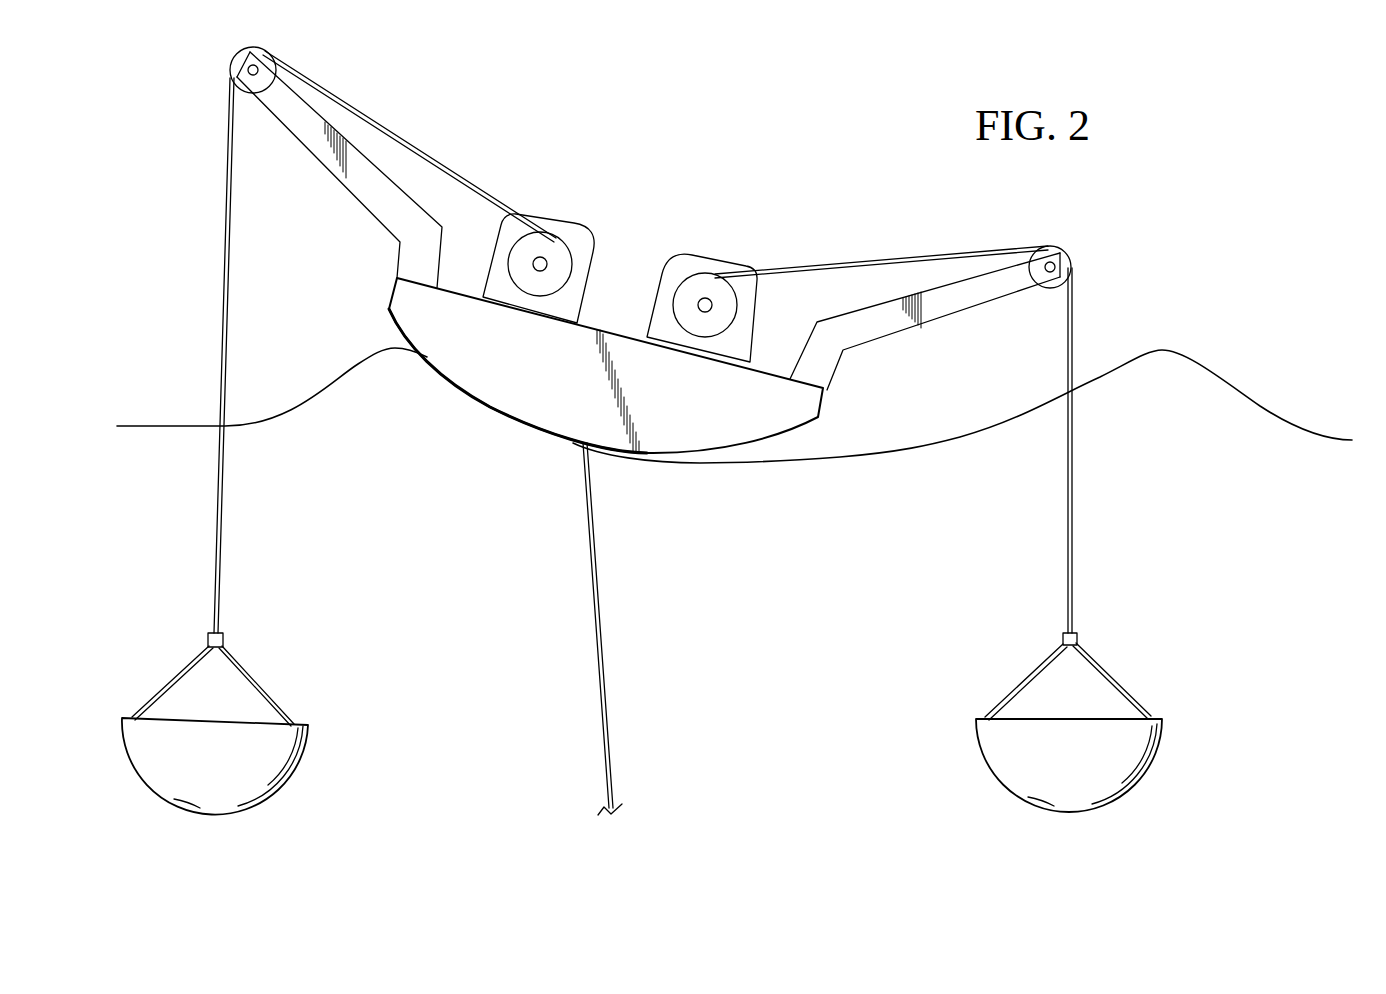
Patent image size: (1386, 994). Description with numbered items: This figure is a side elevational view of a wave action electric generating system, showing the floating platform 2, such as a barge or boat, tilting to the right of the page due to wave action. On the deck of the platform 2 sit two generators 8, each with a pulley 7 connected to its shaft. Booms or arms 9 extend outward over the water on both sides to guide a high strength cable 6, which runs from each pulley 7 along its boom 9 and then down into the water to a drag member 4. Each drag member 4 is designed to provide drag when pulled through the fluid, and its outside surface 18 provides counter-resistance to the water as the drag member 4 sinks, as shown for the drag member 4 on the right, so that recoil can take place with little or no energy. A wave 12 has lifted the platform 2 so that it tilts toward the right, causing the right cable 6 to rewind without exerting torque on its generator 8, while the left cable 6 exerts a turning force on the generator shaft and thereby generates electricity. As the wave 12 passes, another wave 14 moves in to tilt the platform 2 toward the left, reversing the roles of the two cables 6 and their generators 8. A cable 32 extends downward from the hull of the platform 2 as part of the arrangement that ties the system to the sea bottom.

The floating platform 2 is at (767, 440).
The drag member 4 is at (303, 752).
The cable 6 is at (223, 535).
The pulley 7 is at (558, 252).
The generator 8 is at (553, 212).
The boom 9 is at (322, 160).
The wave 12 is at (342, 380).
The wave 14 is at (1217, 373).
The outside surface 18 is at (197, 772).
The cable 32 is at (605, 670).